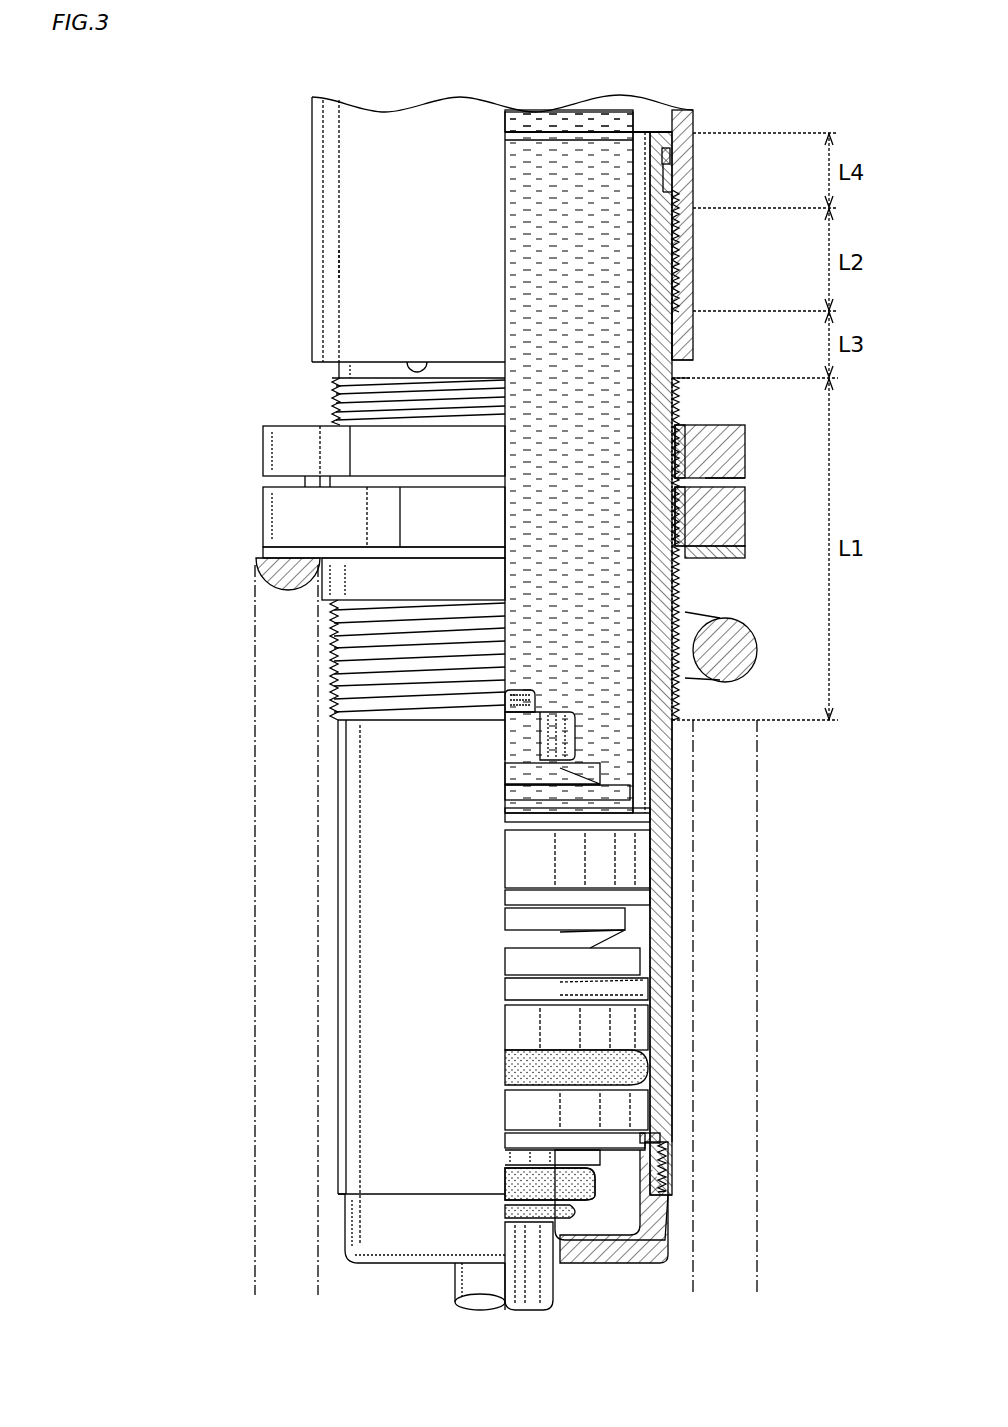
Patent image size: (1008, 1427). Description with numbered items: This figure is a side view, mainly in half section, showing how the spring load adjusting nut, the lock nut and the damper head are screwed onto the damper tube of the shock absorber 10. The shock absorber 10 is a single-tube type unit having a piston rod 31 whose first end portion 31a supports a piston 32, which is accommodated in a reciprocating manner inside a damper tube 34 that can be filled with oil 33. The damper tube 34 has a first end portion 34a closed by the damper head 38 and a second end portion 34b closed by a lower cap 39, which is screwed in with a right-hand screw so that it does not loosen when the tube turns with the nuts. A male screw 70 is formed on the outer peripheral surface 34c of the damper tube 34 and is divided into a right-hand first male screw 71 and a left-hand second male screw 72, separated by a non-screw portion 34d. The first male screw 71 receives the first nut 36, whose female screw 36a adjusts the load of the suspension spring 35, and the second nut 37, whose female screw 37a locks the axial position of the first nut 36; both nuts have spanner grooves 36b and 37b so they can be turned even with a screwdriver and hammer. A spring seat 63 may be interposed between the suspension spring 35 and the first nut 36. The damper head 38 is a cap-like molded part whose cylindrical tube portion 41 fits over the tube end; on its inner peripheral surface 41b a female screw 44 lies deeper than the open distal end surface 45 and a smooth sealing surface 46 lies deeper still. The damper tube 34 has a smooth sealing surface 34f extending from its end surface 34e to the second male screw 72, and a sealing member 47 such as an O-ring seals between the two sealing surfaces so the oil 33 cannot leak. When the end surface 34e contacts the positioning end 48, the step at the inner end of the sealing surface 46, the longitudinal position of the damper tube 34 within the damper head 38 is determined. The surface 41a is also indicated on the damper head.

The shock absorber 10 is at (188, 170).
The piston rod 31 is at (560, 1287).
The first end portion of the piston rod 31a is at (512, 690).
The piston 32 is at (672, 890).
The oil 33 is at (588, 461).
The damper tube 34 is at (672, 838).
The first end portion of the damper tube 34a is at (545, 148).
The second end portion of the damper tube 34b is at (672, 1185).
The outer peripheral surface of the damper tube 34c is at (380, 955).
The non-screw portion 34d is at (676, 370).
The end surface of the damper tube 34e is at (648, 132).
The sealing surface of the damper tube 34f is at (670, 185).
The suspension spring 35 is at (288, 572).
The first nut 36 is at (262, 520).
The female screw of the first nut 36a is at (672, 536).
The spanner groove of the first nut 36b is at (385, 525).
The second nut 37 is at (262, 452).
The female screw of the second nut 37a is at (672, 468).
The spanner groove of the second nut 37b is at (325, 448).
The damper head 38 is at (310, 165).
The lower cap 39 is at (650, 1232).
The tube portion 41 is at (355, 210).
The inner surface 41a is at (357, 265).
The inner peripheral surface of the damper head 41b is at (676, 335).
The female screw of the damper head 44 is at (673, 248).
The open distal end surface 45 is at (420, 360).
The sealing surface of the damper head 46 is at (645, 138).
The sealing member 47 is at (672, 160).
The positioning end 48 is at (585, 148).
The spring seat 63 is at (262, 556).
The male screw 70 is at (690, 690).
The first male screw 71 is at (340, 395).
The second male screw 72 is at (680, 255).